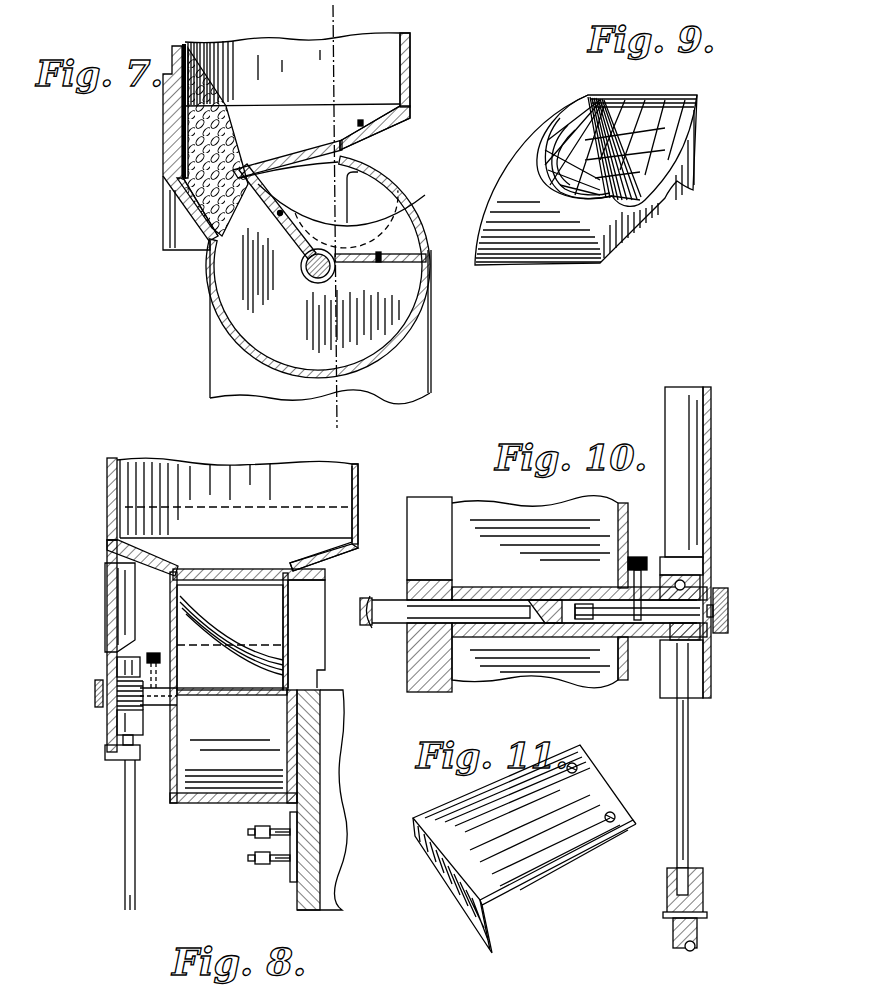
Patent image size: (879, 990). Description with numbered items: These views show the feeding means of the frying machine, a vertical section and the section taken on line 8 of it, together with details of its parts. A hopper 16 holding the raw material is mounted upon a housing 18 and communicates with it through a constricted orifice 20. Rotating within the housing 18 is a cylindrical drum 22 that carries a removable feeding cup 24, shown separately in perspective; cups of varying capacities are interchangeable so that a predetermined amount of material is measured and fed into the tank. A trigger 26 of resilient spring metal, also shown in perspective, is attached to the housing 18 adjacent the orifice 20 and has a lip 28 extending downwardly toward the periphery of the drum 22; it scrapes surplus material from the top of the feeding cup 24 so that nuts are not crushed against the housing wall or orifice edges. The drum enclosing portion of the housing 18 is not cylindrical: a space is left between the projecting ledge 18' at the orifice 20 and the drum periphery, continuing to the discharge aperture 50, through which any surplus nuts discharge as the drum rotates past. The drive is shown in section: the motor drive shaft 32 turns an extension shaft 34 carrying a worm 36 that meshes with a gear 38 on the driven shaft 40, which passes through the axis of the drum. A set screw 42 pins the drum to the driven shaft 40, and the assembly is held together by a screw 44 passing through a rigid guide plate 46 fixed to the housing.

In FIG. 7, the section line 8— 8 is at (307, 18).
In FIG. 7, the hopper 16 is at (407, 53).
In FIG. 8, the hopper 16 is at (352, 470).
In FIG. 7, the housing 18 is at (295, 280).
In FIG. 8, the housing 18 is at (232, 687).
In FIG. 7, the projecting ledge 18' is at (289, 175).
In FIG. 7, the constricted orifice 20 is at (205, 222).
In FIG. 7, the drum 22 is at (208, 262).
In FIG. 8, the drum 22 is at (172, 612).
In FIG. 10, the drum 22 is at (623, 535).
In FIG. 7, the feeding cup 24 is at (392, 212).
In FIG. 9, the feeding cup 24 is at (700, 122).
In FIG. 8, the feeding cup 24 is at (247, 655).
In FIG. 7, the trigger 26 is at (270, 147).
In FIG. 11, the trigger 26 is at (553, 855).
In FIG. 7, the lip 28 is at (346, 272).
In FIG. 11, the lip 28 is at (446, 896).
In FIG. 10, the drive shaft 32 is at (698, 936).
In FIG. 10, the extension shaft 34 is at (690, 782).
In FIG. 8, the worm 36 is at (107, 736).
In FIG. 10, the gear 38 is at (704, 570).
In FIG. 7, the driven shaft 40 is at (312, 278).
In FIG. 8, the driven shaft 40 is at (234, 700).
In FIG. 10, the driven shaft 40 is at (511, 615).
In FIG. 8, the set screw 42 is at (152, 652).
In FIG. 10, the set screw 42 is at (640, 557).
In FIG. 8, the screw 44 is at (95, 689).
In FIG. 10, the screw 44 is at (728, 602).
In FIG. 8, the guide plate 46 is at (110, 592).
In FIG. 10, the guide plate 46 is at (704, 488).
In FIG. 7, the discharge aperture 50 is at (362, 190).